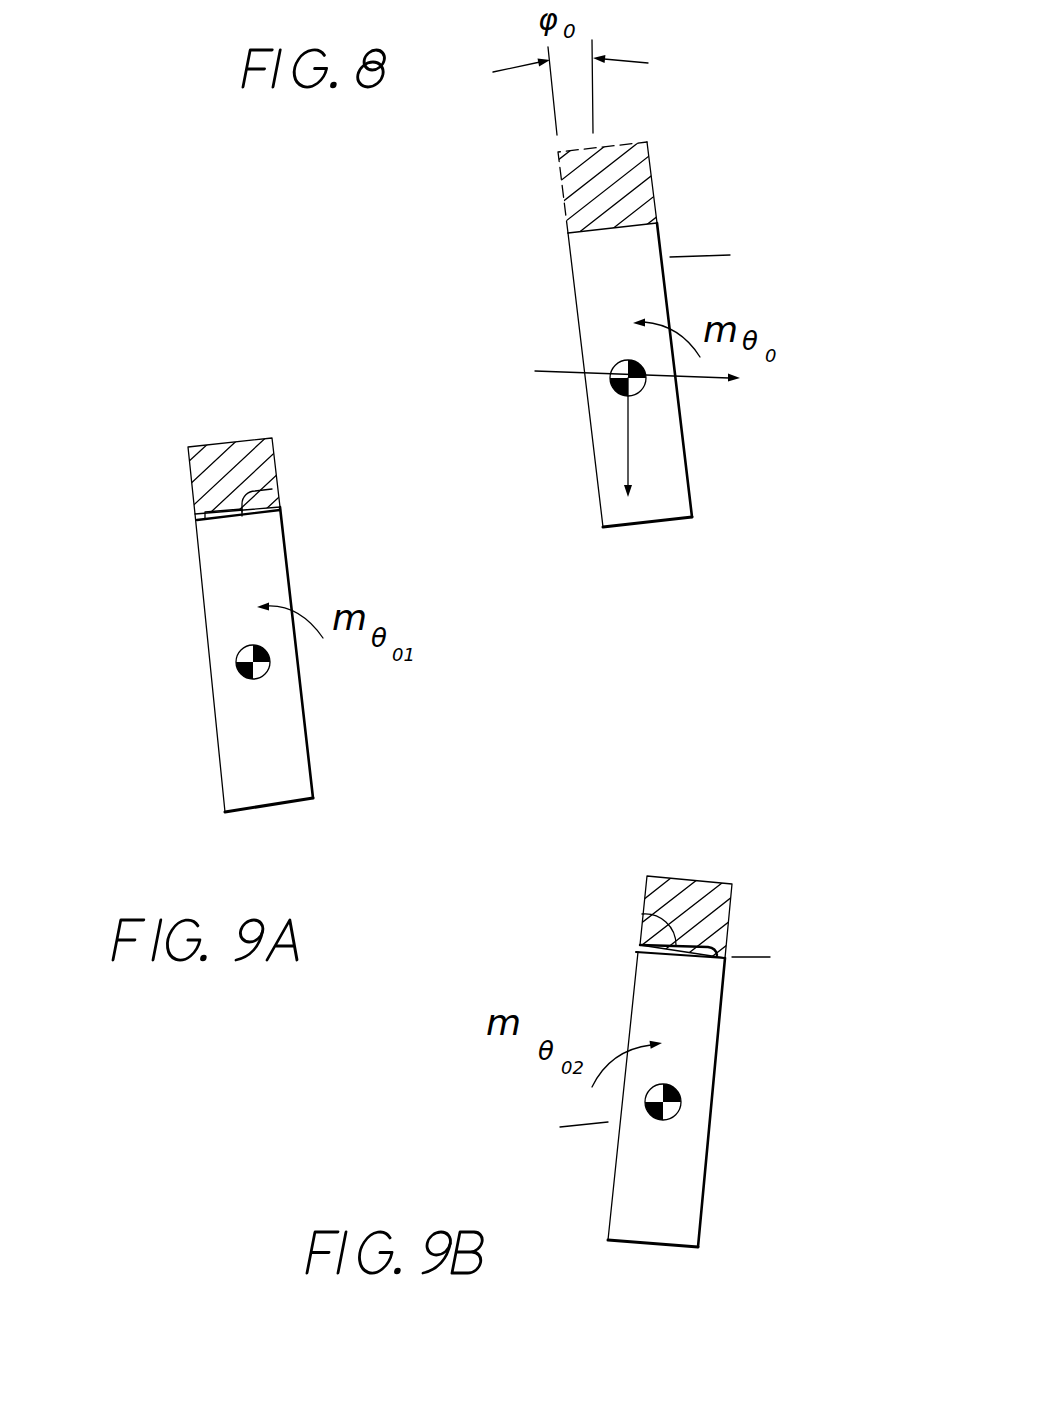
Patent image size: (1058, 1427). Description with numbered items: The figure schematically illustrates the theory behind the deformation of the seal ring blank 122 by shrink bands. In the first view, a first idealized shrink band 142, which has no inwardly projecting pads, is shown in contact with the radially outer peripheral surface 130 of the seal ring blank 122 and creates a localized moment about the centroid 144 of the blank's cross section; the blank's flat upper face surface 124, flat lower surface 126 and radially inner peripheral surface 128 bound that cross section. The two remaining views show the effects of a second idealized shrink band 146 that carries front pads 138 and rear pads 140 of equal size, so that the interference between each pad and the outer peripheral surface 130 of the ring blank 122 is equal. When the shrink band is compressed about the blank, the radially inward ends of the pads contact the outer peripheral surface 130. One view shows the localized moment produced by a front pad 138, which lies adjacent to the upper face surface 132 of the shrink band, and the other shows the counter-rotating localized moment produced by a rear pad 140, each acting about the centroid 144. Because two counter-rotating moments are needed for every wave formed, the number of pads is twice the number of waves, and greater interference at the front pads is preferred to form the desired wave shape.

In FIG. 8, the seal ring blank 122 is at (690, 497).
In FIG. 9A, the seal ring blank 122 is at (196, 690).
In FIG. 9B, the seal ring blank 122 is at (599, 1193).
In FIG. 9A, the flat upper face surface 124 is at (203, 603).
In FIG. 9B, the flat upper face surface 124 is at (633, 983).
In FIG. 9A, the flat lower surface 126 is at (313, 770).
In FIG. 9B, the flat lower surface 126 is at (710, 1122).
In FIG. 9A, the radially inner peripheral surface 128 is at (265, 807).
In FIG. 9B, the radially inner peripheral surface 128 is at (675, 1247).
In FIG. 9A, the radially outer peripheral surface 130 is at (272, 489).
In FIG. 9B, the radially outer peripheral surface 130 is at (642, 914).
In FIG. 9A, the upper face surface 132 is at (190, 467).
In FIG. 9A, the front pad 138 is at (197, 521).
In FIG. 9B, the rear pad 140 is at (725, 957).
In FIG. 8, the first idealized shrink band 142 is at (650, 167).
In FIG. 8, the centroid 144 is at (617, 365).
In FIG. 9A, the centroid 144 is at (268, 668).
In FIG. 9B, the centroid 144 is at (680, 1087).
In FIG. 9A, the second idealized shrink band 146 is at (288, 444).
In FIG. 9B, the second idealized shrink band 146 is at (745, 897).